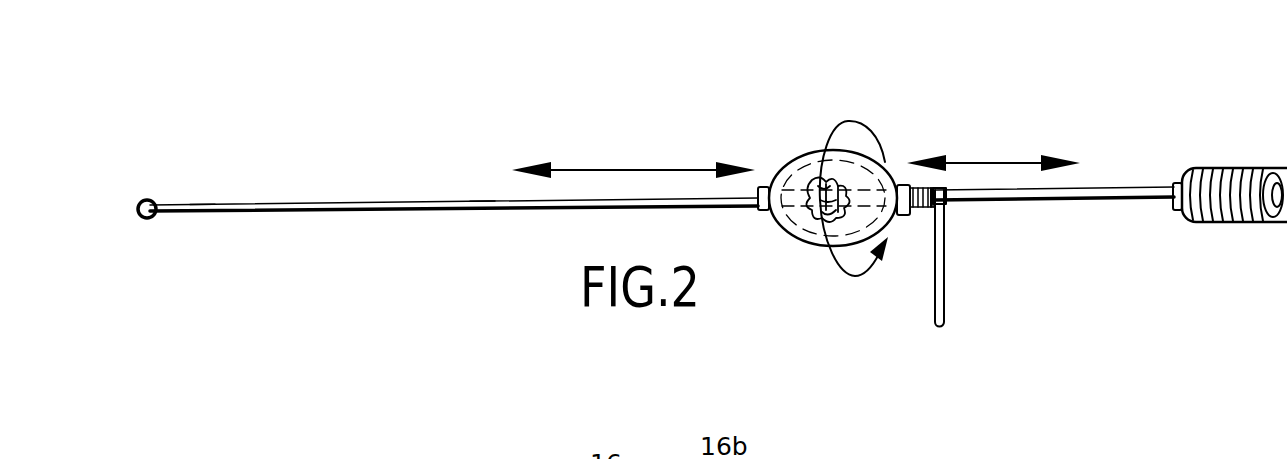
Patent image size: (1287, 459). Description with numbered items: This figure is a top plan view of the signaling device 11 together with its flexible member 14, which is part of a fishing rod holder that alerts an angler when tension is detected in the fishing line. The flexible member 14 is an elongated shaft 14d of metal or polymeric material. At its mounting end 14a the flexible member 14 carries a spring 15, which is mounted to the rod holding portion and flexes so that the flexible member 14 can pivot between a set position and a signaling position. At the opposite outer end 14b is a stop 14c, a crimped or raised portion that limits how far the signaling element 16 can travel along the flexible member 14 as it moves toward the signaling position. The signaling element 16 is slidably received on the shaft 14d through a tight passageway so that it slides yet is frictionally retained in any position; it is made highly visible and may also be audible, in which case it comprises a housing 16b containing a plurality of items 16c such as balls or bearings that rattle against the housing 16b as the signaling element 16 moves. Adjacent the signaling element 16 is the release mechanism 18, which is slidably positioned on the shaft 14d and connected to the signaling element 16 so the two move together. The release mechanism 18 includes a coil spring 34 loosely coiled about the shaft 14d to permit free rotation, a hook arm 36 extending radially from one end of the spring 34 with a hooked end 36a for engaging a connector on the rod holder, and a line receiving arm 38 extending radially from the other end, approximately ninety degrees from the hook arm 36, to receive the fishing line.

The signaling device 11 is at (598, 31).
The flexible member 14 is at (428, 243).
The mounting end 14a is at (1170, 185).
The outer end 14b is at (200, 204).
The stop 14c is at (143, 199).
The elongated shaft 14d is at (482, 200).
The spring 15 is at (1240, 168).
The signaling element 16 is at (799, 124).
The housing 16b is at (783, 165).
The items 16c is at (838, 282).
The release mechanism 18 is at (966, 228).
The coil spring 34 is at (922, 228).
The hook arm 36 is at (915, 235).
The hooked end 36a is at (908, 230).
The line receiving arm 38 is at (948, 272).